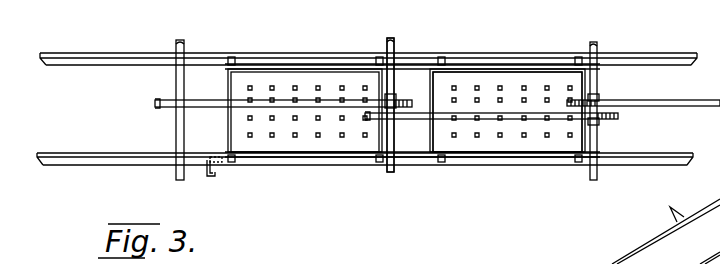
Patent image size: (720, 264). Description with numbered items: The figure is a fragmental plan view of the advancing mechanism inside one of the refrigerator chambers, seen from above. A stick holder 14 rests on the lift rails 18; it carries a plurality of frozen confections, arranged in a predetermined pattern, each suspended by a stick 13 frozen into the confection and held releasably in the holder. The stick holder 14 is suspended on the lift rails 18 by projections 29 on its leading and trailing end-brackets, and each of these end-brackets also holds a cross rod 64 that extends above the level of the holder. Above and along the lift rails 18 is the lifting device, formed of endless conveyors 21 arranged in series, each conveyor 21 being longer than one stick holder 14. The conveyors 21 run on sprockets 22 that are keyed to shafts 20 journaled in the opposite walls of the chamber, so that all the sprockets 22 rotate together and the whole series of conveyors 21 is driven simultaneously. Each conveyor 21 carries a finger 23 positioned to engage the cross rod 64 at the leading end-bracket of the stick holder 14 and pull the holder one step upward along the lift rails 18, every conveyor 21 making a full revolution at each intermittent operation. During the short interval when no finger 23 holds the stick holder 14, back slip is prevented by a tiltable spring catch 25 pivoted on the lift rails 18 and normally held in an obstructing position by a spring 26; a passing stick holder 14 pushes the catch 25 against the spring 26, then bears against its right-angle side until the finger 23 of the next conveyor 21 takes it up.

The stick 13 is at (474, 86).
The stick holder 14 is at (518, 80).
The lift rail 18 is at (668, 56).
The shaft 20 is at (392, 40).
The endless conveyor 21 is at (283, 103).
The sprocket 22 is at (170, 100).
The finger 23 is at (681, 214).
The tiltable spring catch 25 is at (222, 153).
The spring 26 is at (216, 170).
The projection 29 is at (379, 163).
The cross rod 64 is at (176, 127).